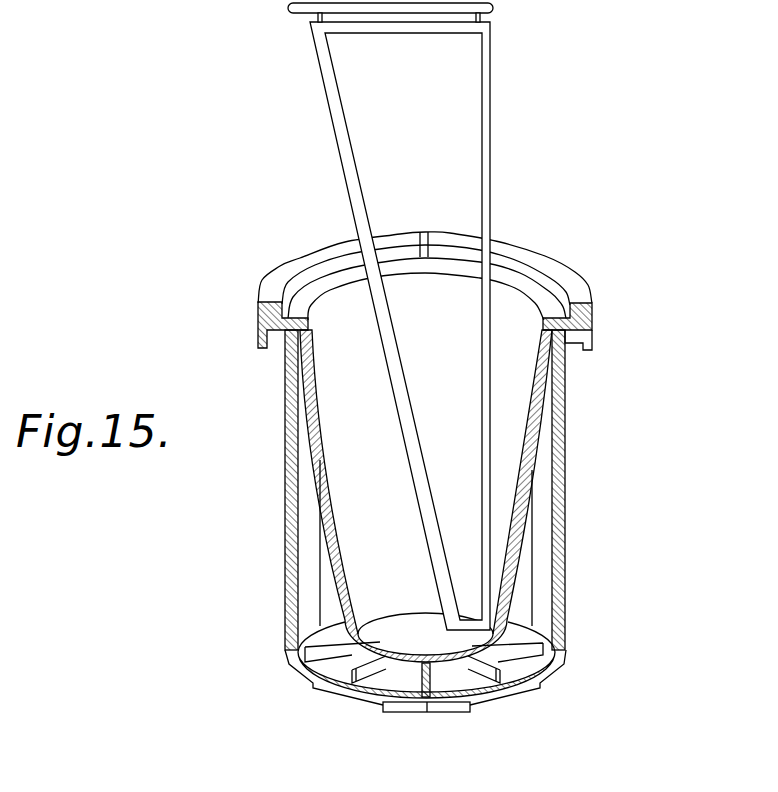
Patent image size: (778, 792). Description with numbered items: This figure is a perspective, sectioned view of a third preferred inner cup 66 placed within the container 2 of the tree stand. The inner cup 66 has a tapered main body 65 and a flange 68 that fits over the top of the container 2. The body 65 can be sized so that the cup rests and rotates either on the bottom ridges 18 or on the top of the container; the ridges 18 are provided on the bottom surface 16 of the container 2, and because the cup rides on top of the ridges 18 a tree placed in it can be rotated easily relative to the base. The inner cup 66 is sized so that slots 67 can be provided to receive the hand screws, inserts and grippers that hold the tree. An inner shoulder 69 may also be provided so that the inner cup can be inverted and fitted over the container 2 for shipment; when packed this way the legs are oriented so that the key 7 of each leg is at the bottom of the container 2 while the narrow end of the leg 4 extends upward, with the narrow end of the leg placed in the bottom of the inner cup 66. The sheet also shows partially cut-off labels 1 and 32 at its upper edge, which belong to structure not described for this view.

The key 7 is at (318, 17).
The leg 4 is at (335, 142).
The slots 67 is at (426, 232).
The inner shoulder 69 is at (300, 308).
The flange 68 is at (597, 343).
The container 2 is at (565, 518).
The inner cup 66 is at (322, 527).
The tapered main body 65 is at (360, 555).
The ridges 18 is at (388, 668).
The bottom surface 16 is at (513, 670).
The device 1 is at (705, 0).
The element 32 is at (43, 7).